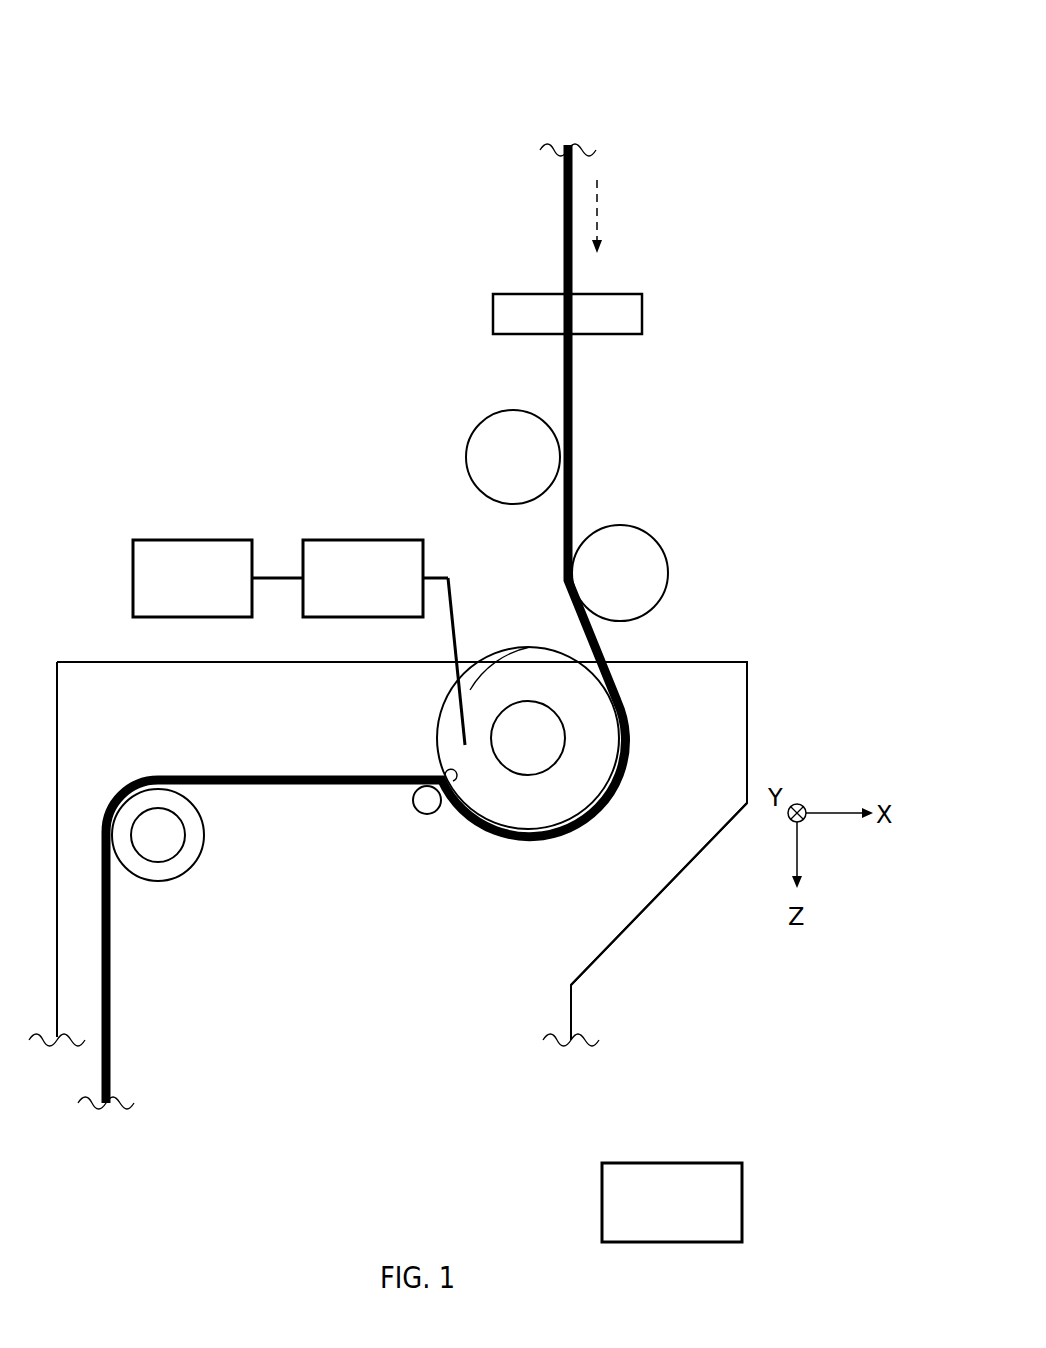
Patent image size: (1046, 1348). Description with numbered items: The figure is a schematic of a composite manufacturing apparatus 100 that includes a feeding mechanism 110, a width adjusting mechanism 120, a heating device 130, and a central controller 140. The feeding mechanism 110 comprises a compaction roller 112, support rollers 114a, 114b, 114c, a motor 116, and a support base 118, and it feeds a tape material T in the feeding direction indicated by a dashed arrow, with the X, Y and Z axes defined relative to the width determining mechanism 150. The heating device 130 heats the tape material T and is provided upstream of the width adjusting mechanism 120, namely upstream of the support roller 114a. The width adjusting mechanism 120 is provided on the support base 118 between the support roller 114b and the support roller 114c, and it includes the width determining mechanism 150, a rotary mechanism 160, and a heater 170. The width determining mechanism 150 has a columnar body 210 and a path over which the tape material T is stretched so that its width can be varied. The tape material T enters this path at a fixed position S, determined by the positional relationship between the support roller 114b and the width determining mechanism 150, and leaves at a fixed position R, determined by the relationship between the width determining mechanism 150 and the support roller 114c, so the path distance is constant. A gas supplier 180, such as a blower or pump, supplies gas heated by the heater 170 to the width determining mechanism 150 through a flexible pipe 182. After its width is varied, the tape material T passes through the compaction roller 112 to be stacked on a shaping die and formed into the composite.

The composite manufacturing apparatus 100 is at (150, 82).
The feeding mechanism 110 is at (433, 663).
The compaction roller 112 is at (163, 883).
The support roller 114a is at (478, 422).
The support roller 114b is at (643, 528).
The support roller 114c is at (437, 813).
The motor 116 is at (185, 840).
The support base 118 is at (662, 893).
The width adjusting mechanism 120 is at (268, 450).
The heating device 130 is at (645, 312).
The central controller 140 is at (632, 1163).
The width determining mechanism 150 is at (440, 692).
The rotary mechanism 160 is at (528, 701).
The heater 170 is at (150, 540).
The gas supplier 180 is at (318, 540).
The flexible pipe 182 is at (450, 593).
The body 210 is at (495, 670).
The tape material T is at (563, 190).
The fixed position S is at (612, 700).
The fixed position R is at (445, 775).